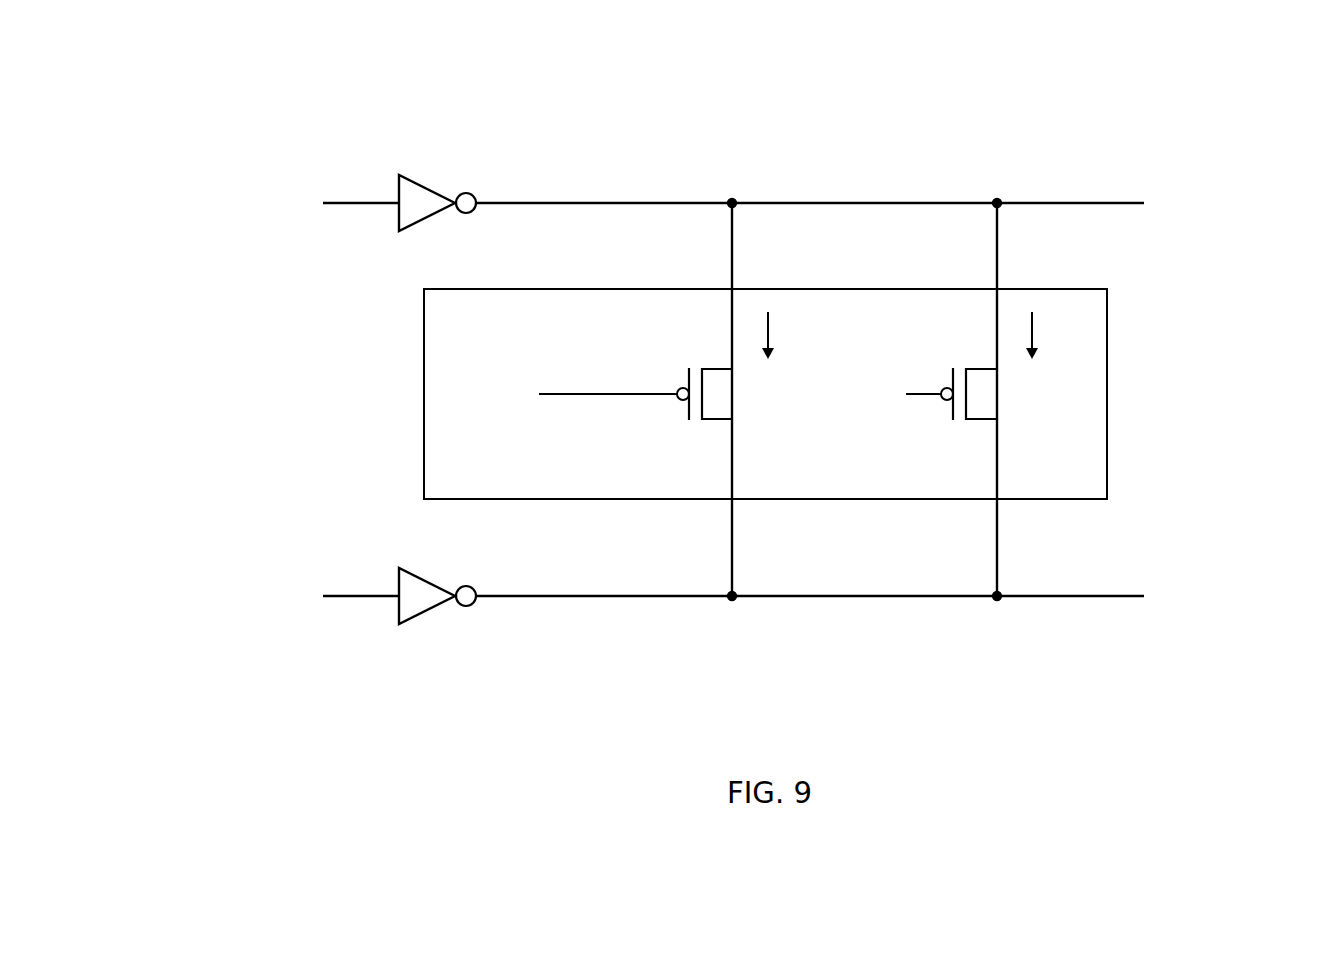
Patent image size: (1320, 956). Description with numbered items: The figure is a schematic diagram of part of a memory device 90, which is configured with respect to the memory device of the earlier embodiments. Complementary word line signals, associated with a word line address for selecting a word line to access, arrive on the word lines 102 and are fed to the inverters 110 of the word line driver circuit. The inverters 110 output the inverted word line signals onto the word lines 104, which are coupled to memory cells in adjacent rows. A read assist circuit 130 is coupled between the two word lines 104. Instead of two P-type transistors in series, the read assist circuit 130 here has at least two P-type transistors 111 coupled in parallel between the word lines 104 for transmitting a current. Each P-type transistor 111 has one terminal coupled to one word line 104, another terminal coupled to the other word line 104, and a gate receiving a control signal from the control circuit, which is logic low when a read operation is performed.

The memory device 90 is at (177, 110).
The word lines 102 is at (340, 201).
The word lines 104 is at (618, 201).
The inverters 110 is at (431, 187).
The P-type transistor 111 is at (728, 416).
The read assist circuit 130 is at (1108, 405).